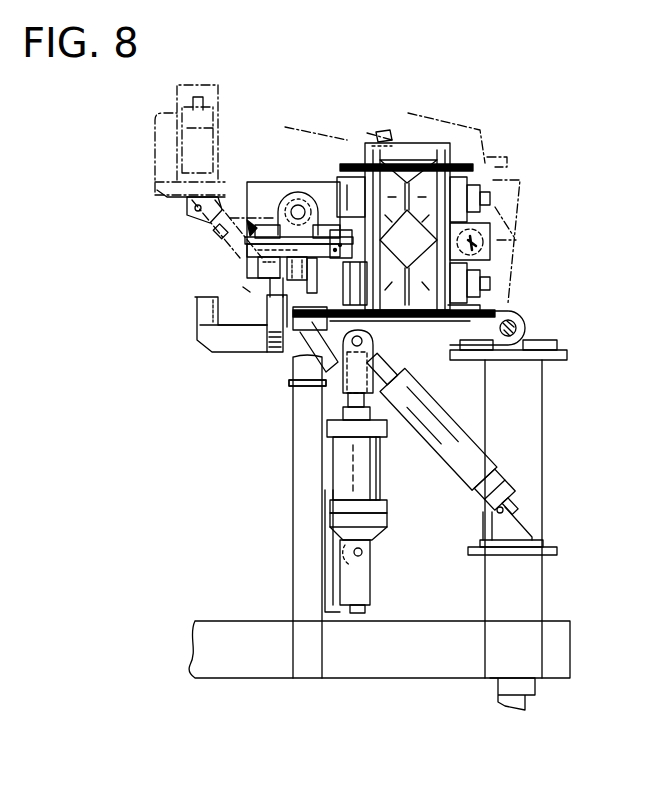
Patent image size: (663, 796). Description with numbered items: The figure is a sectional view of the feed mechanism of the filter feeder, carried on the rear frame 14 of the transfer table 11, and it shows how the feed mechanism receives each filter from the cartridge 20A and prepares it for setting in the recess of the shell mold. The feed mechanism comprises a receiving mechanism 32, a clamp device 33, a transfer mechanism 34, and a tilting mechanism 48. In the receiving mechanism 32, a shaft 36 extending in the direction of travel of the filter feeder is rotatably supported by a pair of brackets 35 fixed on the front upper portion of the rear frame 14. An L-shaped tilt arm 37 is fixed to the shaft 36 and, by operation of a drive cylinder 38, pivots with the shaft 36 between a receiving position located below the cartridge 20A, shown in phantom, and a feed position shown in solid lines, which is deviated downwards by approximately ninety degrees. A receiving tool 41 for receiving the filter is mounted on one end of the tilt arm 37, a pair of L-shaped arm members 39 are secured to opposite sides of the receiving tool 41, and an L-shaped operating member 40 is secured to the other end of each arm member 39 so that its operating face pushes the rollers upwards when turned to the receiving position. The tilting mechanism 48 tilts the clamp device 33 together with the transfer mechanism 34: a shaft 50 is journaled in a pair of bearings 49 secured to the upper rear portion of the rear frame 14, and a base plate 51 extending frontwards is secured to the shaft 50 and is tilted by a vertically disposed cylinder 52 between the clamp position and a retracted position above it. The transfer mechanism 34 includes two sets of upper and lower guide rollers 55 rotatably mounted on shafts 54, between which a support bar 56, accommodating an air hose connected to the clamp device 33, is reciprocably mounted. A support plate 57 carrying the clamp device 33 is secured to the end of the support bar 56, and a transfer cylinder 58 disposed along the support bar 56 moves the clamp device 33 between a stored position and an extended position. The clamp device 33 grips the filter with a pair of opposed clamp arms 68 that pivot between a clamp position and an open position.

The transfer table 11 is at (363, 678).
The rear frame 14 is at (293, 583).
The cartridge 20A is at (222, 90).
The receiving mechanism 32 is at (203, 393).
The clamp device 33 is at (251, 224).
The transfer mechanism 34 is at (466, 151).
The brackets 35 is at (297, 192).
The shaft 36 is at (312, 200).
The tilt arm 37 is at (264, 182).
The drive cylinder 38 is at (433, 415).
The arm members 39 is at (152, 157).
The operating member 40 is at (195, 313).
The receiving tool 41 is at (220, 210).
The tilting mechanism 48 is at (308, 496).
The bearings 49 is at (518, 312).
The shaft 50 is at (527, 318).
The base plate 51 is at (483, 305).
The cylinder 52 is at (387, 485).
The shafts 54 is at (470, 197).
The guide rollers 55 is at (432, 168).
The support bar 56 is at (495, 180).
The support plate 57 is at (250, 265).
The transfer cylinder 58 is at (490, 235).
The clamp arms 68 is at (265, 305).